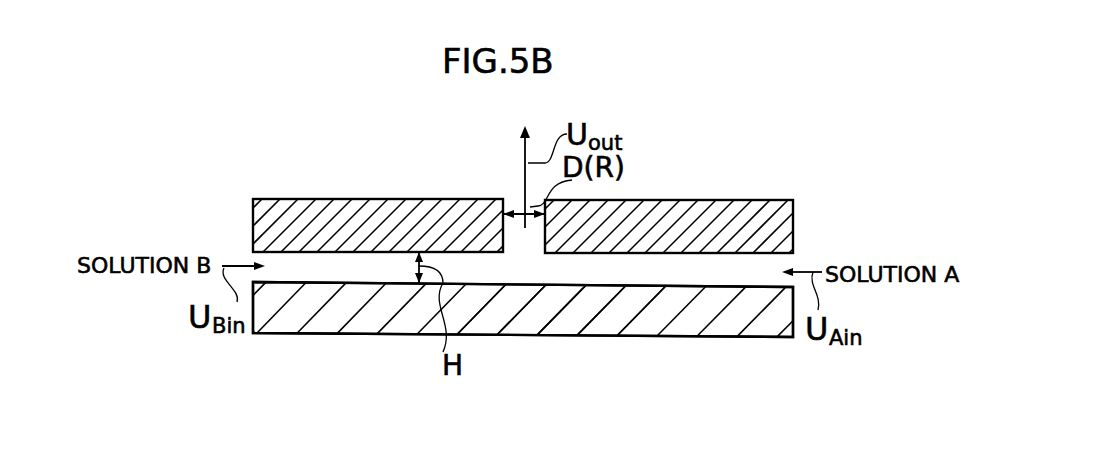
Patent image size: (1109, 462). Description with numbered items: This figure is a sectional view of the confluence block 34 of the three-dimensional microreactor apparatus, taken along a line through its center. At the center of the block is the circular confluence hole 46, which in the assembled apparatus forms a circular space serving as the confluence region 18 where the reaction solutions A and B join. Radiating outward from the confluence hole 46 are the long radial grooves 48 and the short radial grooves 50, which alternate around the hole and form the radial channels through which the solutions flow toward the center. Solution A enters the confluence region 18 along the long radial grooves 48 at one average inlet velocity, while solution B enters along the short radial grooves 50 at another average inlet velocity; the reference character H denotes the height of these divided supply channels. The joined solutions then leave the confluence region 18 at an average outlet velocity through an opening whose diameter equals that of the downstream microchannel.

The confluence block 34 is at (739, 196).
The confluence hole 46 is at (520, 272).
The confluence region 18 is at (523, 309).
The short radial grooves 50 is at (323, 272).
The long radial grooves 48 is at (695, 272).